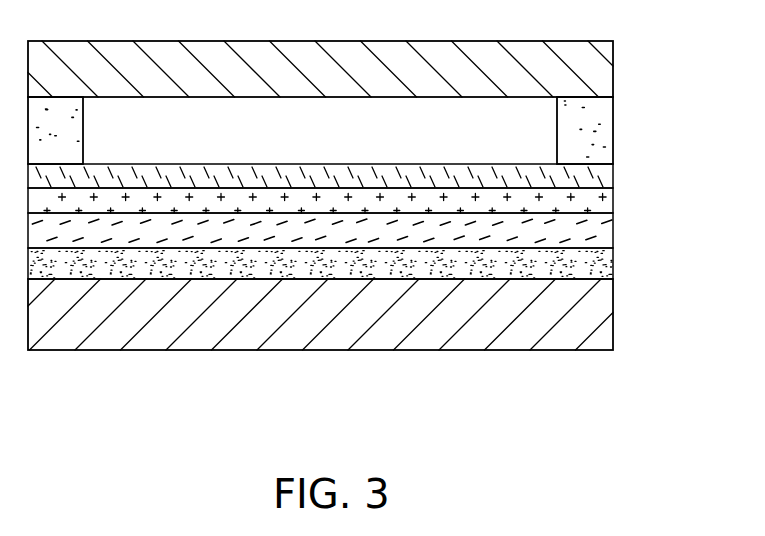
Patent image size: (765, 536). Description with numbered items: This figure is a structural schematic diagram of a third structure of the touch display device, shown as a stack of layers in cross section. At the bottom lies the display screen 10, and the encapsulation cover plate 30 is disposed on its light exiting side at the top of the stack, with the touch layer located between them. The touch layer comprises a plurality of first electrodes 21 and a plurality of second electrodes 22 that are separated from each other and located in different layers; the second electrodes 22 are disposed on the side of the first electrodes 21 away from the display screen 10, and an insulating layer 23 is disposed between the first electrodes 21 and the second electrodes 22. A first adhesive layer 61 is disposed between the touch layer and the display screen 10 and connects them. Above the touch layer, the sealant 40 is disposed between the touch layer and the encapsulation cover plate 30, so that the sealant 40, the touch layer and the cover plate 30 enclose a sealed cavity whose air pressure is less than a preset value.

The display screen 10 is at (576, 317).
The first electrodes 21 is at (205, 228).
The second electrodes 22 is at (448, 177).
The insulating layer 23 is at (332, 202).
The encapsulation cover plate 30 is at (590, 72).
The sealant 40 is at (578, 127).
The first adhesive layer 61 is at (105, 258).